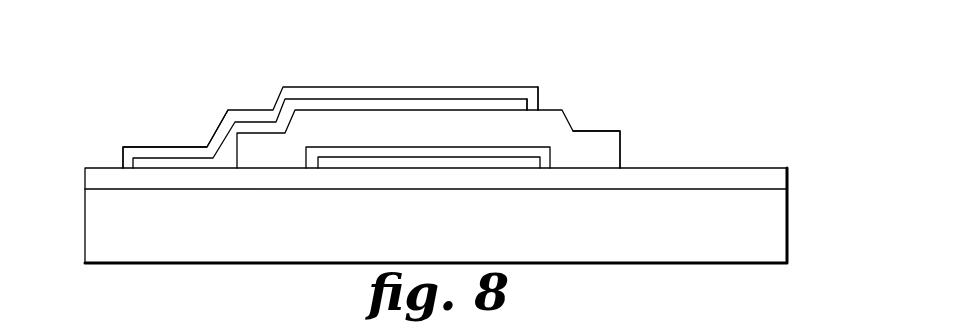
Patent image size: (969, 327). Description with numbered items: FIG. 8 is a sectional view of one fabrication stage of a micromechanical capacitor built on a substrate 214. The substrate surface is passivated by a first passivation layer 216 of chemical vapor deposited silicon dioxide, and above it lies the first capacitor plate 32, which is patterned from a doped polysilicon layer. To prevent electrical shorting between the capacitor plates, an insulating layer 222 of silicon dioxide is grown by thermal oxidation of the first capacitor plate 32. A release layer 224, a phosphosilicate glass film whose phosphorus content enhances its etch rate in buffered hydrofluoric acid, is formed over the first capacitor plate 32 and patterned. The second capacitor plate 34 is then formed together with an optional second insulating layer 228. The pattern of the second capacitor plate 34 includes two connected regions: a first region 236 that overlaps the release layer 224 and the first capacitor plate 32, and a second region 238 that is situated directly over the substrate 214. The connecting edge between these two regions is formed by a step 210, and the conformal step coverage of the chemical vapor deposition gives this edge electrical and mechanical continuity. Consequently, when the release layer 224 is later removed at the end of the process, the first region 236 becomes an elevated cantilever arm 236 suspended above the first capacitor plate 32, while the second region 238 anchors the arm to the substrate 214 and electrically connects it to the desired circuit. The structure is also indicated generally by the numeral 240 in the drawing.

The substrate 214 is at (453, 235).
The first passivation layer 216 is at (755, 180).
The first capacitor plate 32 is at (345, 168).
The insulating layer 222 is at (497, 150).
The step 210 is at (227, 96).
The release layer 224 is at (597, 153).
The first region 236 is at (421, 74).
The second insulating layer 228 is at (323, 87).
The second region 238 is at (151, 132).
The second capacitor plate 34 is at (519, 100).
The device 240 is at (193, 319).